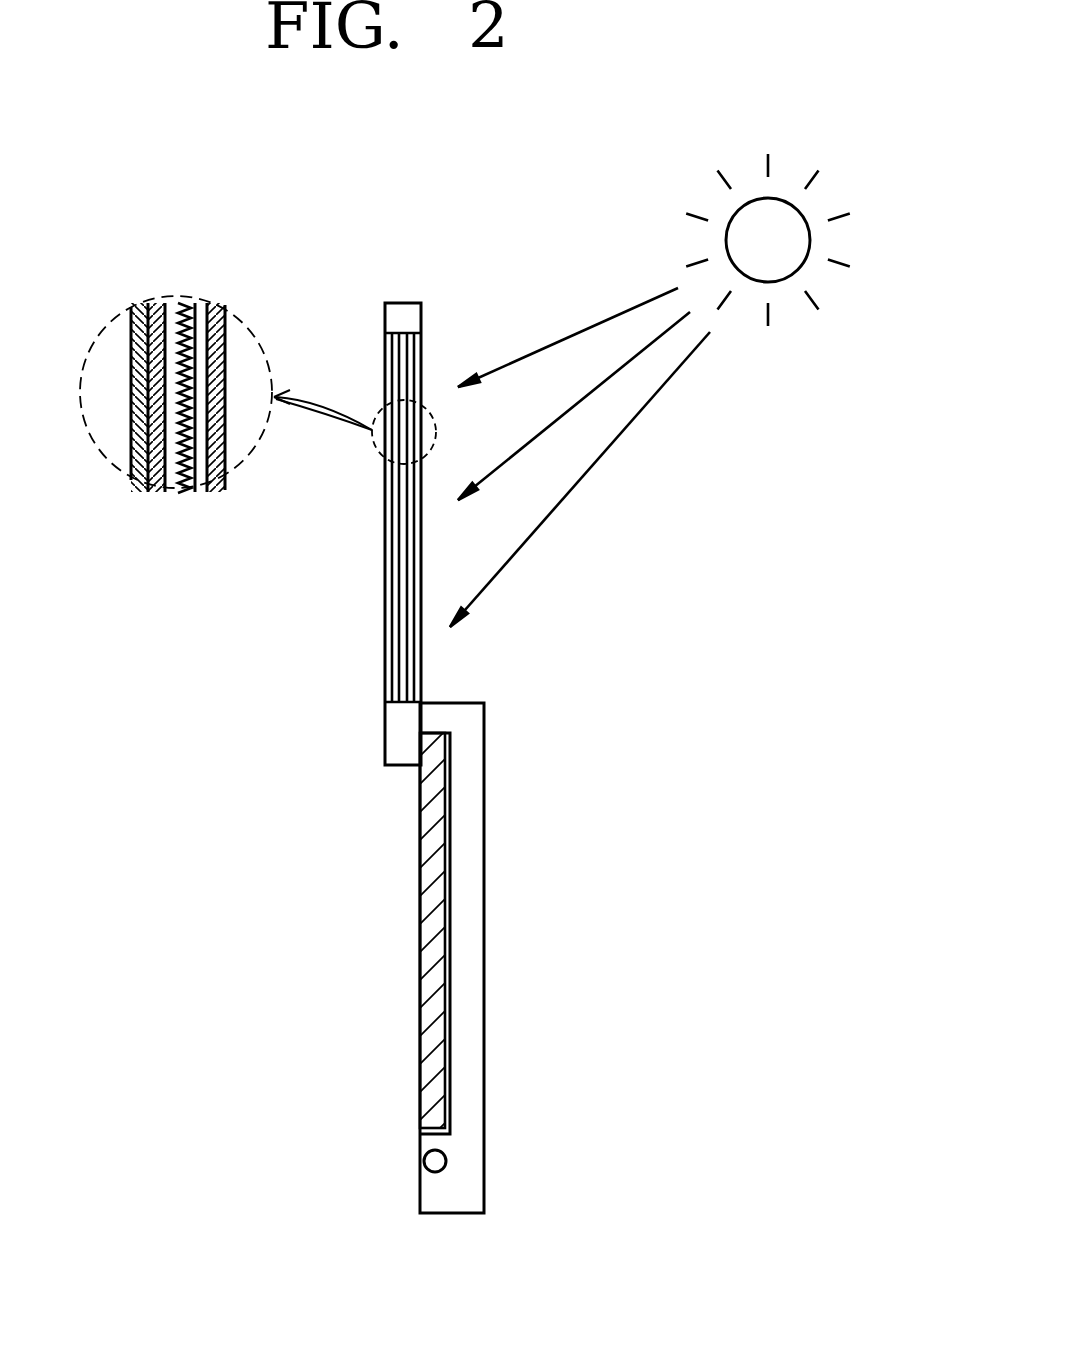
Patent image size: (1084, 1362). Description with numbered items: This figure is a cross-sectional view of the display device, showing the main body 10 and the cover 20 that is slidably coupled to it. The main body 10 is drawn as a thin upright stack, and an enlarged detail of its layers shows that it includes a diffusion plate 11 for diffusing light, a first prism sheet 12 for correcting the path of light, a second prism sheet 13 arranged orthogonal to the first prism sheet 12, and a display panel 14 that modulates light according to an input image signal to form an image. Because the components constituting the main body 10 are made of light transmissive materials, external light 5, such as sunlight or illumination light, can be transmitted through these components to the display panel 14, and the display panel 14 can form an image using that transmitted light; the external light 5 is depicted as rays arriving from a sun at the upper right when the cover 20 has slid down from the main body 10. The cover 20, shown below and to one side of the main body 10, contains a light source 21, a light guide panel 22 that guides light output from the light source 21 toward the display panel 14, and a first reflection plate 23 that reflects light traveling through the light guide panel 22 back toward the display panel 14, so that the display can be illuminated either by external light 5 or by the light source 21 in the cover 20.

The external light 5 is at (834, 286).
The main body 10 is at (370, 652).
The diffusion plate 11 is at (217, 478).
The first prism sheet 12 is at (187, 481).
The second prism sheet 13 is at (157, 482).
The display panel 14 is at (132, 477).
The cover 20 is at (470, 966).
The light source 21 is at (447, 1160).
The light guide panel 22 is at (427, 893).
The first reflection plate 23 is at (445, 903).